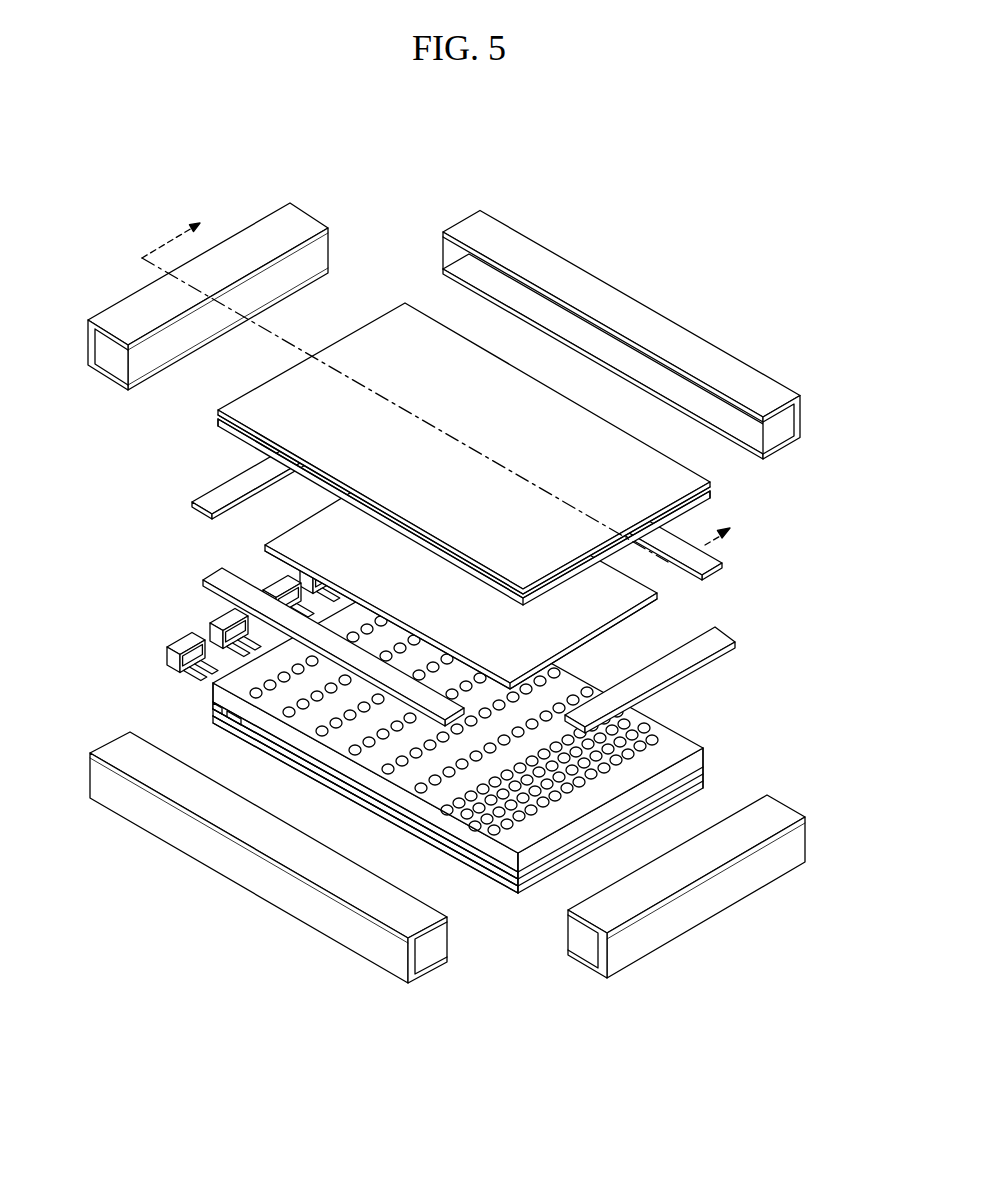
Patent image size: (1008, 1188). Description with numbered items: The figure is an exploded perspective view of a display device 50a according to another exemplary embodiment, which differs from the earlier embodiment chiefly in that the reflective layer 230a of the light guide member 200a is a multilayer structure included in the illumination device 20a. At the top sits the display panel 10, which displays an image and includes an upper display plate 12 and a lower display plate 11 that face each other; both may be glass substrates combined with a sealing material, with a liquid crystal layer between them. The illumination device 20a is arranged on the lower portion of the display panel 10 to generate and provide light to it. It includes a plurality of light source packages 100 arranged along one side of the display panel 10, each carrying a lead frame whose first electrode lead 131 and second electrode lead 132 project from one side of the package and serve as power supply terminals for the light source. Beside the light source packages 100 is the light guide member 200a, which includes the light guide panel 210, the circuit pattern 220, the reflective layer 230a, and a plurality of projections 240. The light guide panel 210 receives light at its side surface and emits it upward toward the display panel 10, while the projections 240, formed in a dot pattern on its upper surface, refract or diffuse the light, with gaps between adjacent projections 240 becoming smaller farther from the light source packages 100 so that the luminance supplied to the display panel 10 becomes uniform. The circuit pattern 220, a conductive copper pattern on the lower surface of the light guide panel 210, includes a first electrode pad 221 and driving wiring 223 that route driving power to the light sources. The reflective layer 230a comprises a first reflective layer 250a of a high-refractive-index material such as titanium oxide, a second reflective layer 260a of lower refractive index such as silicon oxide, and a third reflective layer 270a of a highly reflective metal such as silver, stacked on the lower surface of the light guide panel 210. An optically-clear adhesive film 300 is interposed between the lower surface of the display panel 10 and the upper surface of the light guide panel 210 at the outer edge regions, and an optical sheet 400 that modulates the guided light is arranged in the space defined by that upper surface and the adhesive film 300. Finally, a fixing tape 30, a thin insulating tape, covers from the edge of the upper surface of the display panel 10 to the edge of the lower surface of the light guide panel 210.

The display device 50a is at (624, 163).
The display panel 10 is at (815, 350).
The lower display plate 11 is at (757, 477).
The upper display plate 12 is at (718, 477).
The illumination device 20a is at (808, 565).
The fixing tape 30 is at (700, 912).
The light source package 100 is at (169, 622).
The first electrode lead 131 is at (147, 653).
The second electrode lead 132 is at (165, 689).
The light guide member 200a is at (520, 913).
The light guide panel 210 is at (707, 753).
The circuit pattern 220 is at (707, 774).
The first electrode pad 221 is at (213, 707).
The driving wiring 223 is at (242, 720).
The reflective layer 230a is at (333, 1015).
The projections 240 is at (667, 728).
The first reflective layer 250a is at (428, 830).
The second reflective layer 260a is at (347, 784).
The third reflective layer 270a is at (386, 816).
The optically-clear adhesive film 300 is at (703, 648).
The optical sheet 400 is at (657, 590).